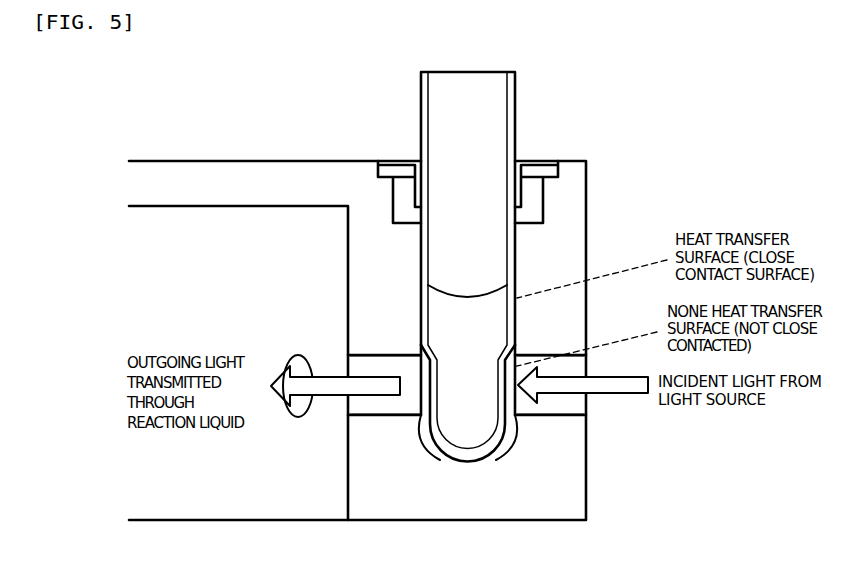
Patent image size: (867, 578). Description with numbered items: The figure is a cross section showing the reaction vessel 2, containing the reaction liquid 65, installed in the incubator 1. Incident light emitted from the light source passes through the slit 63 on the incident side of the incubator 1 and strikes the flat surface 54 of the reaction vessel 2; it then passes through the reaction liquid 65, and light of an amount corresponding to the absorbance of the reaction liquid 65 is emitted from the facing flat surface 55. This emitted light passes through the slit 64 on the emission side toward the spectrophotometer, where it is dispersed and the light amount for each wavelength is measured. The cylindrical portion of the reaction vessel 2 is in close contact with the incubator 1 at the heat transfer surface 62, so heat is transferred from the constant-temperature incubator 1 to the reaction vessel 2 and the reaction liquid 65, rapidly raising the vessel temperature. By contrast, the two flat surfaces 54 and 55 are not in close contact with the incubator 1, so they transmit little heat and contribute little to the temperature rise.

The incubator 1 is at (587, 175).
The reaction vessel 2 is at (516, 103).
The flat surface 54 is at (510, 395).
The facing flat surface 55 is at (427, 385).
The heat transfer surface 62 is at (517, 263).
The slit on incident side 63 is at (558, 407).
The slit on emission side 64 is at (383, 403).
The reaction liquid 65 is at (468, 340).